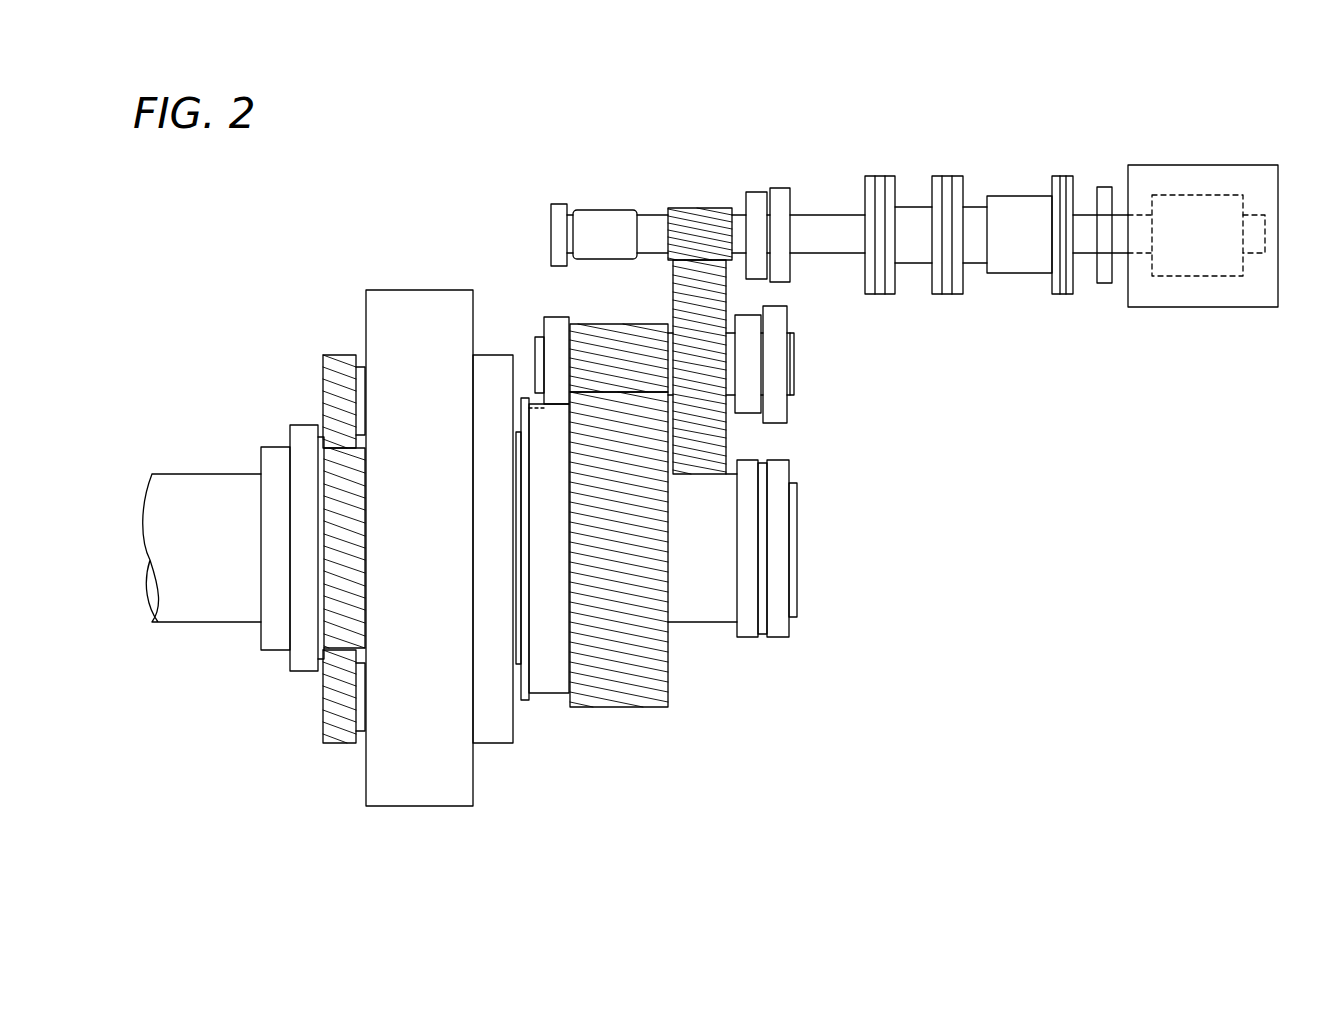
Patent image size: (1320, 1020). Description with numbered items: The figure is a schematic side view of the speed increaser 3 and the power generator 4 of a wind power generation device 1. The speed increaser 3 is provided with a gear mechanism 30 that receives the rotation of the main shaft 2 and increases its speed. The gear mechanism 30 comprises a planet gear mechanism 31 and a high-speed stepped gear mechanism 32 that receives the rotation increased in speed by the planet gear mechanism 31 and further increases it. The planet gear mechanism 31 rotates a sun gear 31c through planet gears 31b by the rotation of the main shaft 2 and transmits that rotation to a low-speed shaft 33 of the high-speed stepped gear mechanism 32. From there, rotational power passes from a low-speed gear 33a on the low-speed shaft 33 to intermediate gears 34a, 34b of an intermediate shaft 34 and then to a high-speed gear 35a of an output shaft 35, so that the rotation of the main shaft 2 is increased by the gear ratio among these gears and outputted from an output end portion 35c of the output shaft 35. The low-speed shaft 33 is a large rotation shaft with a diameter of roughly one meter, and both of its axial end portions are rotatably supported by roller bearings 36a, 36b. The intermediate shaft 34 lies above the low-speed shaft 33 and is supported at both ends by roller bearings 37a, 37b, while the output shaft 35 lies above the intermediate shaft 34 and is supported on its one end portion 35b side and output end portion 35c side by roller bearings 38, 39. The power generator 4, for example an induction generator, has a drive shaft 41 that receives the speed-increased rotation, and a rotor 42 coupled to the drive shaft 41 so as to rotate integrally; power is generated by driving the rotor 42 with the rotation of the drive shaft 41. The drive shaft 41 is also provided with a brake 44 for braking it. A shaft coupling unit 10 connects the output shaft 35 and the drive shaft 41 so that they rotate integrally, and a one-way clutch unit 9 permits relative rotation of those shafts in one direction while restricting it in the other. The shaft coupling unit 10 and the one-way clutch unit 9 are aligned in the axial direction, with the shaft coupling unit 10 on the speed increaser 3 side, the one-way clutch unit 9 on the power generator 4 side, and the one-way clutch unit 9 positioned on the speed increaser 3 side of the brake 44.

The wind power generation device 1 is at (1074, 146).
The main shaft 2 is at (176, 487).
The speed increaser 3 is at (420, 248).
The power generator 4 is at (1192, 307).
The one-way clutch unit 9 is at (1040, 186).
The shaft coupling unit 10 is at (925, 166).
The gear mechanism 30 is at (366, 292).
The planet gear mechanism 31 is at (437, 289).
The planet gears 31b is at (326, 375).
The sun gear 31c is at (326, 493).
The high-speed stepped gear mechanism 32 is at (692, 173).
The low-speed shaft 33 is at (700, 627).
The low-speed gear 33a is at (620, 697).
The intermediate shaft 34 is at (538, 338).
The intermediate gear 34a is at (614, 330).
The intermediate gear 34b is at (726, 290).
The output shaft 35 is at (612, 209).
The high-speed gear 35a is at (705, 209).
The one end portion 35b is at (591, 214).
The output end portion 35c is at (826, 215).
The roller bearing 36a is at (550, 684).
The roller bearing 36b is at (773, 638).
The roller bearing 37a is at (555, 325).
The roller bearing 37b is at (752, 333).
The roller bearing 38 is at (558, 206).
The roller bearing 39 is at (780, 200).
The drive shaft 41 is at (1082, 258).
The rotor 42 is at (1218, 268).
The brake 44 is at (1103, 284).